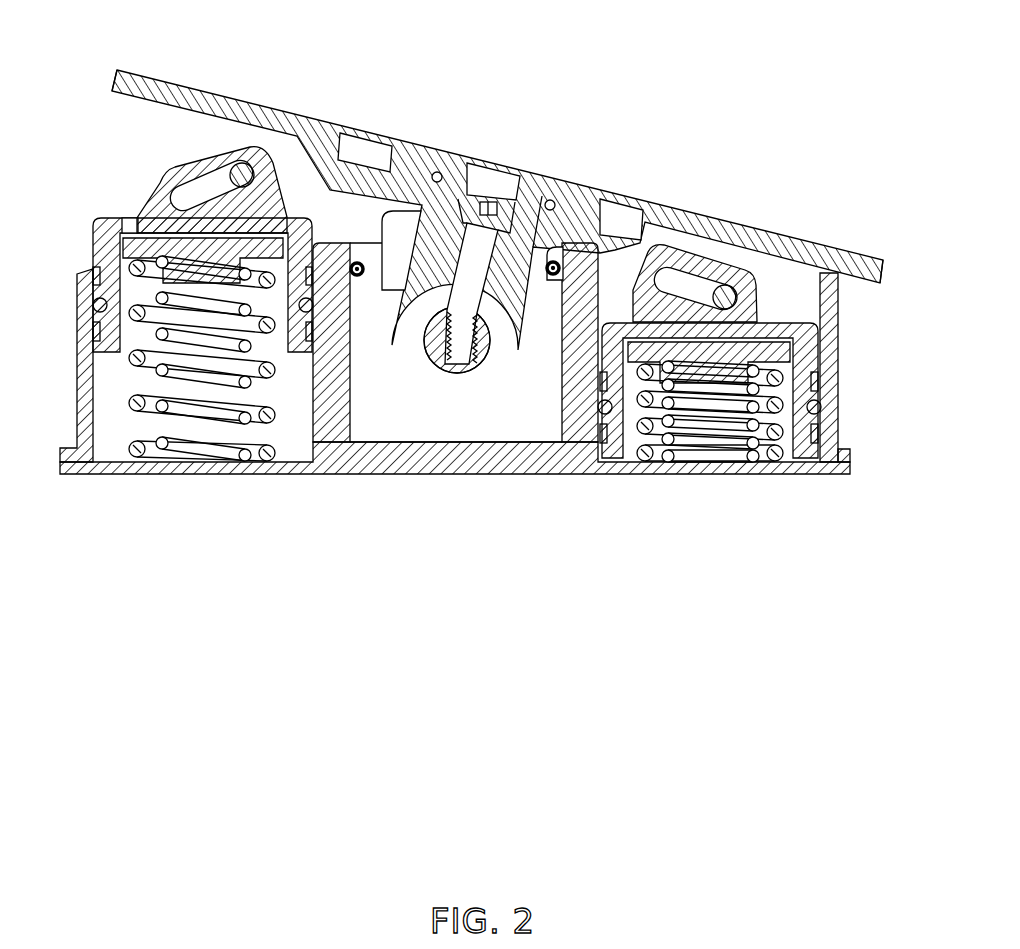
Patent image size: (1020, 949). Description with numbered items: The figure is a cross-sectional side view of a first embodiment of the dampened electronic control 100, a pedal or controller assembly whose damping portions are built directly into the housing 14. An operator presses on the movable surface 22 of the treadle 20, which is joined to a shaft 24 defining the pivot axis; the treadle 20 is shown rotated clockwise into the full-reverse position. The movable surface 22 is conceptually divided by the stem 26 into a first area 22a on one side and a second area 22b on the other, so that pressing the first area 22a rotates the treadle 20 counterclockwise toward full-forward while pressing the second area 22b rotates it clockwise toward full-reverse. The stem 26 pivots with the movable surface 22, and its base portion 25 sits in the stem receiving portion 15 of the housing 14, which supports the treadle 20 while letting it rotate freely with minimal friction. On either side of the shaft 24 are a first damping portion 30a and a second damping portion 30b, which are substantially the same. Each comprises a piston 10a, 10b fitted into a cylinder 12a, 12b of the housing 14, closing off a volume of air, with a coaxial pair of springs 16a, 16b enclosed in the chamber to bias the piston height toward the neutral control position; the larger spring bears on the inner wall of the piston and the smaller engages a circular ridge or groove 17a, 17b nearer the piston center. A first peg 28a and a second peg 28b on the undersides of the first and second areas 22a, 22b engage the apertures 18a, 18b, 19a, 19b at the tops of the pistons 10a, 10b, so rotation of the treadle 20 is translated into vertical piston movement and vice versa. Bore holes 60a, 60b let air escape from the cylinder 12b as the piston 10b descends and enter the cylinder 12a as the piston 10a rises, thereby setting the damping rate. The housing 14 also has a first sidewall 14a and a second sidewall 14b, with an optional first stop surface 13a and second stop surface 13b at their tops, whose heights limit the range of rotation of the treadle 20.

The dampened electronic control 100 is at (657, 86).
The treadle 20 is at (399, 136).
The movable surface 22 is at (431, 150).
The first area 22a is at (153, 70).
The second area 22b is at (822, 222).
The shaft 24 is at (500, 338).
The base portion 25 is at (416, 358).
The stem 26 is at (505, 290).
The stem receiving portion 15 is at (453, 422).
The housing 14 is at (580, 425).
The first sidewall 14a is at (77, 434).
The second sidewall 14b is at (834, 350).
The cylinder 12a is at (322, 408).
The cylinder 12b is at (810, 460).
The piston 10a is at (100, 230).
The piston 10b is at (812, 345).
The first stop surface 13a is at (96, 273).
The second stop surface 13b is at (812, 372).
The circular ridge or groove 17a is at (95, 305).
The circular ridge or groove 17b is at (820, 411).
The spring 16a is at (272, 425).
The spring 16b is at (760, 460).
The first damping portion 30a is at (180, 494).
The second damping portion 30b is at (706, 503).
The aperture 18a is at (233, 150).
The aperture 18b is at (683, 262).
The aperture 19a is at (188, 192).
The aperture 19b is at (690, 292).
The first peg 28a is at (250, 162).
The second peg 28b is at (728, 296).
The bore hole 60a is at (127, 213).
The bore hole 60b is at (790, 316).